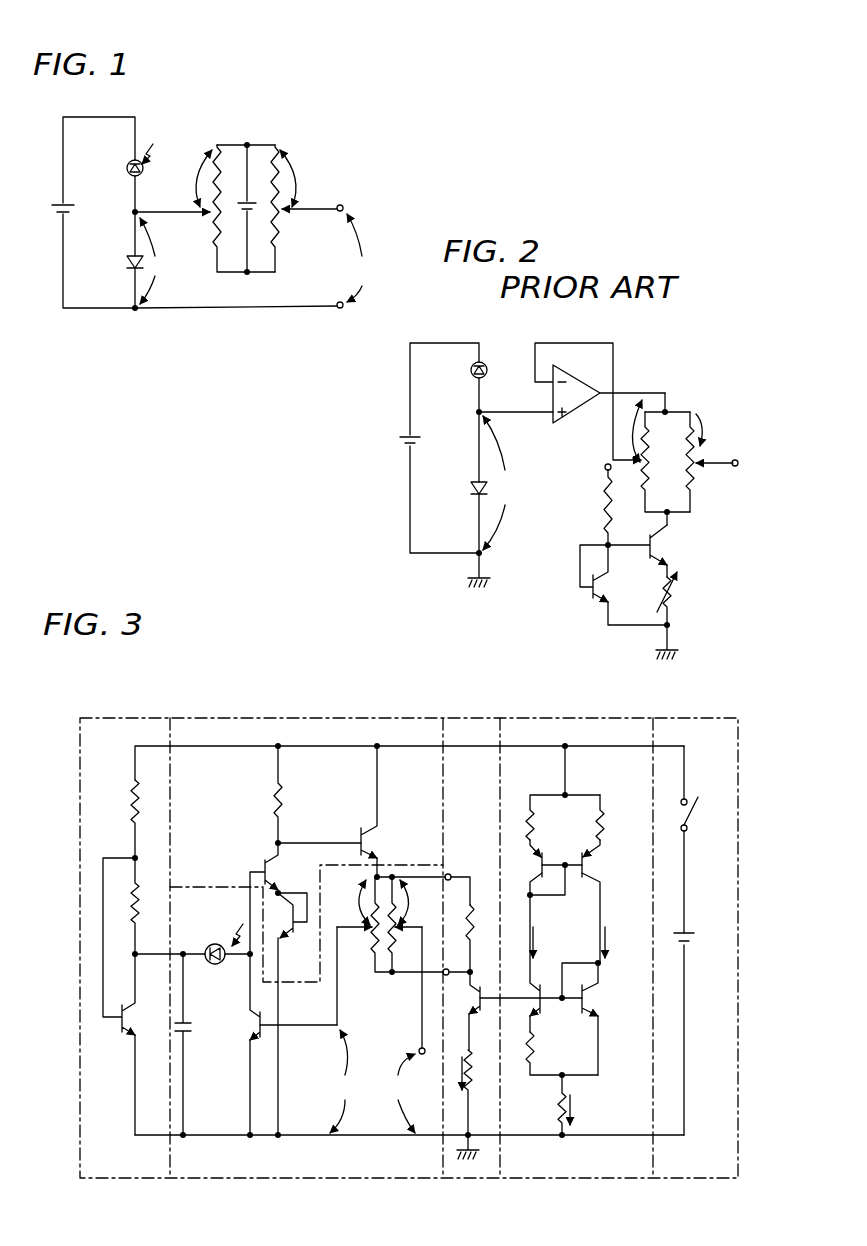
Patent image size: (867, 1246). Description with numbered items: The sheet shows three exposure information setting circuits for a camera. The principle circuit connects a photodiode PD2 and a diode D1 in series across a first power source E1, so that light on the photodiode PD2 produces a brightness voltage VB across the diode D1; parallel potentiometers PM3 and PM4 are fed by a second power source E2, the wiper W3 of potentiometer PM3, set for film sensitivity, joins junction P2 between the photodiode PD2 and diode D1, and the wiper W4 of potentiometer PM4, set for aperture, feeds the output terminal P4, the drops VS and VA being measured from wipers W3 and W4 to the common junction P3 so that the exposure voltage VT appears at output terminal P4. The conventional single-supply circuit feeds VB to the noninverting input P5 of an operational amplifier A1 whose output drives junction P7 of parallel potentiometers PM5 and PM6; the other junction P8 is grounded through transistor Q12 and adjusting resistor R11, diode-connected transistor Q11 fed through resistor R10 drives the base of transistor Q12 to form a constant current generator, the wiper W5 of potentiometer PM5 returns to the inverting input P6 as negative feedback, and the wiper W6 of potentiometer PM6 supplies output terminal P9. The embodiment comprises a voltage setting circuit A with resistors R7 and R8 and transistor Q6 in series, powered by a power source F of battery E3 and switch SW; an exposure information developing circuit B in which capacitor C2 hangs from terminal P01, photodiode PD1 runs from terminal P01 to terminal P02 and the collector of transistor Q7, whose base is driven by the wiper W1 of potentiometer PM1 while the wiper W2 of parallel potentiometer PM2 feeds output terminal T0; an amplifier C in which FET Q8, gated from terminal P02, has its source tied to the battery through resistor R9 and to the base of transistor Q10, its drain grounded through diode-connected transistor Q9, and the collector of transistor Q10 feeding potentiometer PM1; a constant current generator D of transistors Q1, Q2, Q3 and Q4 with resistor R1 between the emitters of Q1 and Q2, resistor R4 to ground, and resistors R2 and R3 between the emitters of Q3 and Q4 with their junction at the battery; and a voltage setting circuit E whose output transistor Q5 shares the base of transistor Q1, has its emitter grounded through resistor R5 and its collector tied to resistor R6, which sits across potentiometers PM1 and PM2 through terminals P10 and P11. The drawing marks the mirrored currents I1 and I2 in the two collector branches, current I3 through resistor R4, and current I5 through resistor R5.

In FIG. 1, the first power source E1 is at (50, 211).
In FIG. 1, the photodiode PD2 is at (114, 164).
In FIG. 1, the junction P2 is at (134, 211).
In FIG. 1, the wiper W3 is at (181, 213).
In FIG. 1, the diode D1 is at (127, 262).
In FIG. 1, the voltage signal VB is at (160, 261).
In FIG. 2, the voltage signal VB is at (505, 483).
In FIG. 3, the voltage signal VB is at (348, 1081).
In FIG. 1, the junction P3 is at (247, 121).
In FIG. 1, the potentiometer PM3 is at (213, 250).
In FIG. 1, the potentiometer PM4 is at (281, 246).
In FIG. 1, the second power source E2 is at (243, 214).
In FIG. 1, the voltage signal VS is at (193, 178).
In FIG. 2, the voltage signal VS is at (630, 431).
In FIG. 3, the voltage signal VS is at (357, 902).
In FIG. 1, the voltage signal VA is at (296, 178).
In FIG. 2, the voltage signal VA is at (708, 433).
In FIG. 3, the voltage signal VA is at (410, 902).
In FIG. 1, the output terminal P4 is at (341, 204).
In FIG. 1, the wiper W4 is at (317, 212).
In FIG. 1, the exposure information signal VT is at (365, 258).
In FIG. 3, the exposure information signal VT is at (398, 1093).
In FIG. 2, the noninverting input terminal P5 is at (535, 416).
In FIG. 2, the inverting input terminal P6 is at (542, 382).
In FIG. 2, the operational amplifier A1 is at (583, 416).
In FIG. 2, the junction P7 is at (668, 410).
In FIG. 2, the potentiometer PM5 is at (660, 484).
In FIG. 2, the potentiometer PM6 is at (693, 500).
In FIG. 2, the wiper W5 is at (634, 470).
In FIG. 2, the wiper W6 is at (708, 470).
In FIG. 2, the output terminal P9 is at (737, 461).
In FIG. 2, the resistor R10 is at (603, 510).
In FIG. 2, the junction P8 is at (670, 516).
In FIG. 2, the transistor Q11 is at (600, 592).
In FIG. 2, the transistor Q12 is at (660, 550).
In FIG. 2, the adjusting resistor R11 is at (673, 602).
In FIG. 3, the amplifier C is at (273, 727).
In FIG. 3, the voltage setting circuit A is at (115, 1173).
In FIG. 3, the exposure information developing circuit B is at (233, 1170).
In FIG. 3, the constant current generator D is at (573, 1165).
In FIG. 3, the voltage setting circuit E is at (474, 1172).
In FIG. 3, the power source F is at (701, 1165).
In FIG. 3, the resistor R1 is at (562, 1055).
In FIG. 3, the resistor R2 is at (563, 794).
In FIG. 3, the resistor R3 is at (619, 819).
In FIG. 3, the resistor R4 is at (549, 1105).
In FIG. 3, the resistor R5 is at (470, 1068).
In FIG. 3, the resistor R6 is at (471, 908).
In FIG. 3, the resistor R7 is at (152, 819).
In FIG. 3, the resistor R8 is at (152, 904).
In FIG. 3, the resistor R9 is at (295, 794).
In FIG. 3, the transistor Q1 is at (524, 964).
In FIG. 3, the transistor Q2 is at (590, 1003).
In FIG. 3, the transistor Q3 is at (540, 864).
In FIG. 3, the transistor Q4 is at (590, 864).
In FIG. 3, the output transistor Q5 is at (470, 990).
In FIG. 3, the transistor Q6 is at (130, 1030).
In FIG. 3, the transistor Q7 is at (255, 1030).
In FIG. 3, the field effect transistor Q8 is at (266, 866).
In FIG. 3, the transistor Q9 is at (300, 906).
In FIG. 3, the transistor Q10 is at (373, 838).
In FIG. 3, the photodiode PD1 is at (209, 946).
In FIG. 3, the terminal P01 is at (180, 956).
In FIG. 3, the terminal P02 is at (248, 958).
In FIG. 3, the capacitor C2 is at (192, 1026).
In FIG. 3, the wiper W1 is at (337, 928).
In FIG. 3, the wiper W2 is at (415, 928).
In FIG. 3, the potentiometer PM1 is at (370, 955).
In FIG. 3, the potentiometer PM2 is at (410, 960).
In FIG. 3, the output terminal T0 is at (418, 1052).
In FIG. 3, the current I1 is at (543, 945).
In FIG. 3, the current I2 is at (619, 945).
In FIG. 3, the current I3 is at (583, 1114).
In FIG. 3, the current I5 is at (452, 1080).
In FIG. 3, the terminal P10 is at (449, 873).
In FIG. 3, the terminal P11 is at (455, 966).
In FIG. 3, the switch SW is at (709, 839).
In FIG. 3, the battery E3 is at (702, 1034).